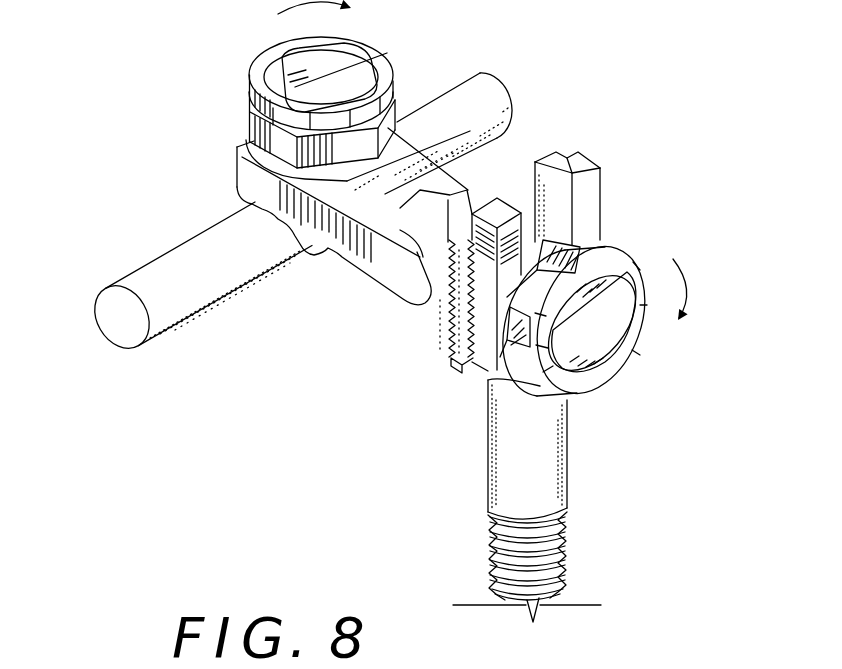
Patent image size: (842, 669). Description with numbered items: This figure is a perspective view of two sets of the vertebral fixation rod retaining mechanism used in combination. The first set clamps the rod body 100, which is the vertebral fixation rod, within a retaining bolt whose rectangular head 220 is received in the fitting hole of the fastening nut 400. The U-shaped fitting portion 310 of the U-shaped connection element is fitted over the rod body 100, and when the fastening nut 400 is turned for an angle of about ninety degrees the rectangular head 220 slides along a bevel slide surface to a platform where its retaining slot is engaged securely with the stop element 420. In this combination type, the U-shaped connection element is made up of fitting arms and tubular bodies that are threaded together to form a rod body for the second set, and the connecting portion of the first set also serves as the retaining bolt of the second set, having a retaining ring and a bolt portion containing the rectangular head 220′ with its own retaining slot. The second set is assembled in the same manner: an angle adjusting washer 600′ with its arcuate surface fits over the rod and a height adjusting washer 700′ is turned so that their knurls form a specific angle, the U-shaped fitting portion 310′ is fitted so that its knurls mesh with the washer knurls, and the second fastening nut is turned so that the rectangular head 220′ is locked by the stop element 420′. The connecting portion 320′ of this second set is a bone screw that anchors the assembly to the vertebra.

The rod body 100 is at (118, 323).
The rectangular head 220 is at (295, 87).
The U-shaped fitting portion 310 is at (253, 182).
The stop element 420 is at (385, 72).
The U-shaped fitting portion 310′ is at (588, 195).
The stop element 420′ is at (627, 267).
The rectangular head 220′ is at (597, 341).
The fastening nut 400 is at (613, 380).
The angle adjusting washer 600′ is at (437, 313).
The height adjusting washer 700′ is at (460, 372).
The connecting portion 320′ is at (567, 560).